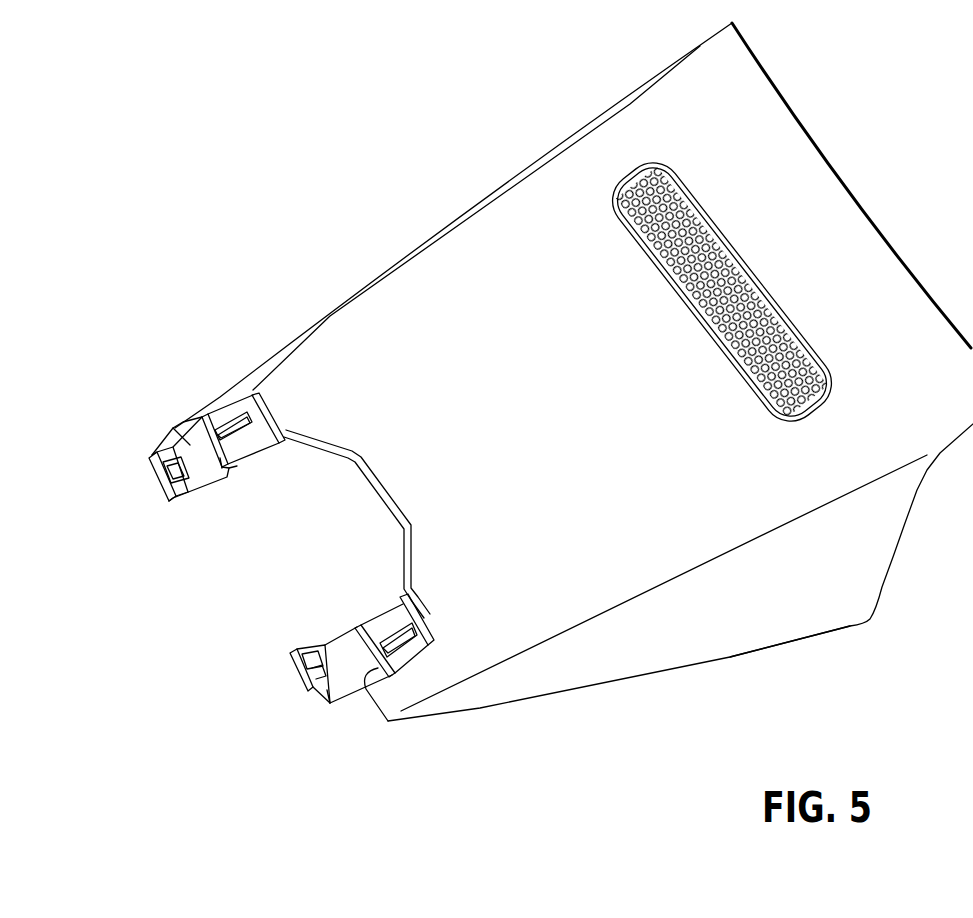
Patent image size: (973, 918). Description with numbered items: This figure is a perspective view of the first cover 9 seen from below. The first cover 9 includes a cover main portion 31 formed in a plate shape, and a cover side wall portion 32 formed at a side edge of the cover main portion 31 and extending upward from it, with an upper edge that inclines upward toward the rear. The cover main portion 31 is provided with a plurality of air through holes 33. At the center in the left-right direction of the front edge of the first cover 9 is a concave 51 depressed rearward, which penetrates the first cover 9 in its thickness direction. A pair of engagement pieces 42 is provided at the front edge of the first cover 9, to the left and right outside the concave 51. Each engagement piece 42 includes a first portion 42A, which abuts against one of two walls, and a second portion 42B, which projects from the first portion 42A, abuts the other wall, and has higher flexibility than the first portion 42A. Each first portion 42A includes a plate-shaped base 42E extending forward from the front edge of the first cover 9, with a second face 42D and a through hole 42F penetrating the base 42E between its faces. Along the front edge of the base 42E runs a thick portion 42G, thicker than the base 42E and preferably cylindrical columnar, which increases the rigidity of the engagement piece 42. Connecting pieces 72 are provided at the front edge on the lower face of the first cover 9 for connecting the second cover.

The first cover 9 is at (446, 178).
The cover main portion 31 is at (786, 125).
The cover side wall portion 32 is at (805, 629).
The air through holes 33 is at (751, 303).
The engagement piece 42 is at (166, 508).
The first portion 42A is at (207, 489).
The second portion 42B is at (167, 452).
The second face 42D is at (183, 437).
The base 42E is at (218, 462).
The through hole 42F is at (315, 650).
The thick portion 42G is at (151, 470).
The concave 51 is at (323, 450).
The connecting pieces 72 is at (240, 392).